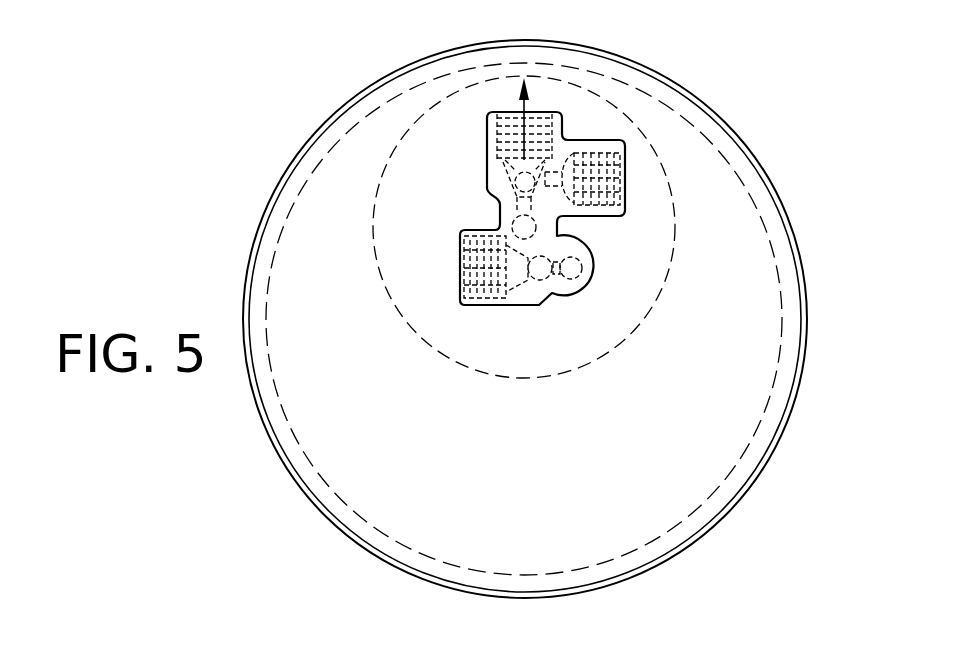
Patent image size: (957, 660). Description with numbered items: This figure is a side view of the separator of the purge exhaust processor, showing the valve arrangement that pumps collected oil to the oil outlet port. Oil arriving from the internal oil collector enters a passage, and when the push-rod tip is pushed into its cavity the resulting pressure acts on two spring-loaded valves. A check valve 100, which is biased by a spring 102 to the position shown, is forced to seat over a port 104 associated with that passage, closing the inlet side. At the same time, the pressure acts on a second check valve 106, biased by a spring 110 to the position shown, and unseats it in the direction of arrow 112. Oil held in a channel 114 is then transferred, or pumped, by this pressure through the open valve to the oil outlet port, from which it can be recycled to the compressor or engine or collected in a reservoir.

The check valve 100 is at (565, 300).
The spring 102 is at (517, 305).
The port 104 is at (585, 268).
The check valve 106 is at (517, 184).
The spring 110 is at (515, 182).
The arrow 112 is at (532, 100).
The channel 114 is at (513, 216).